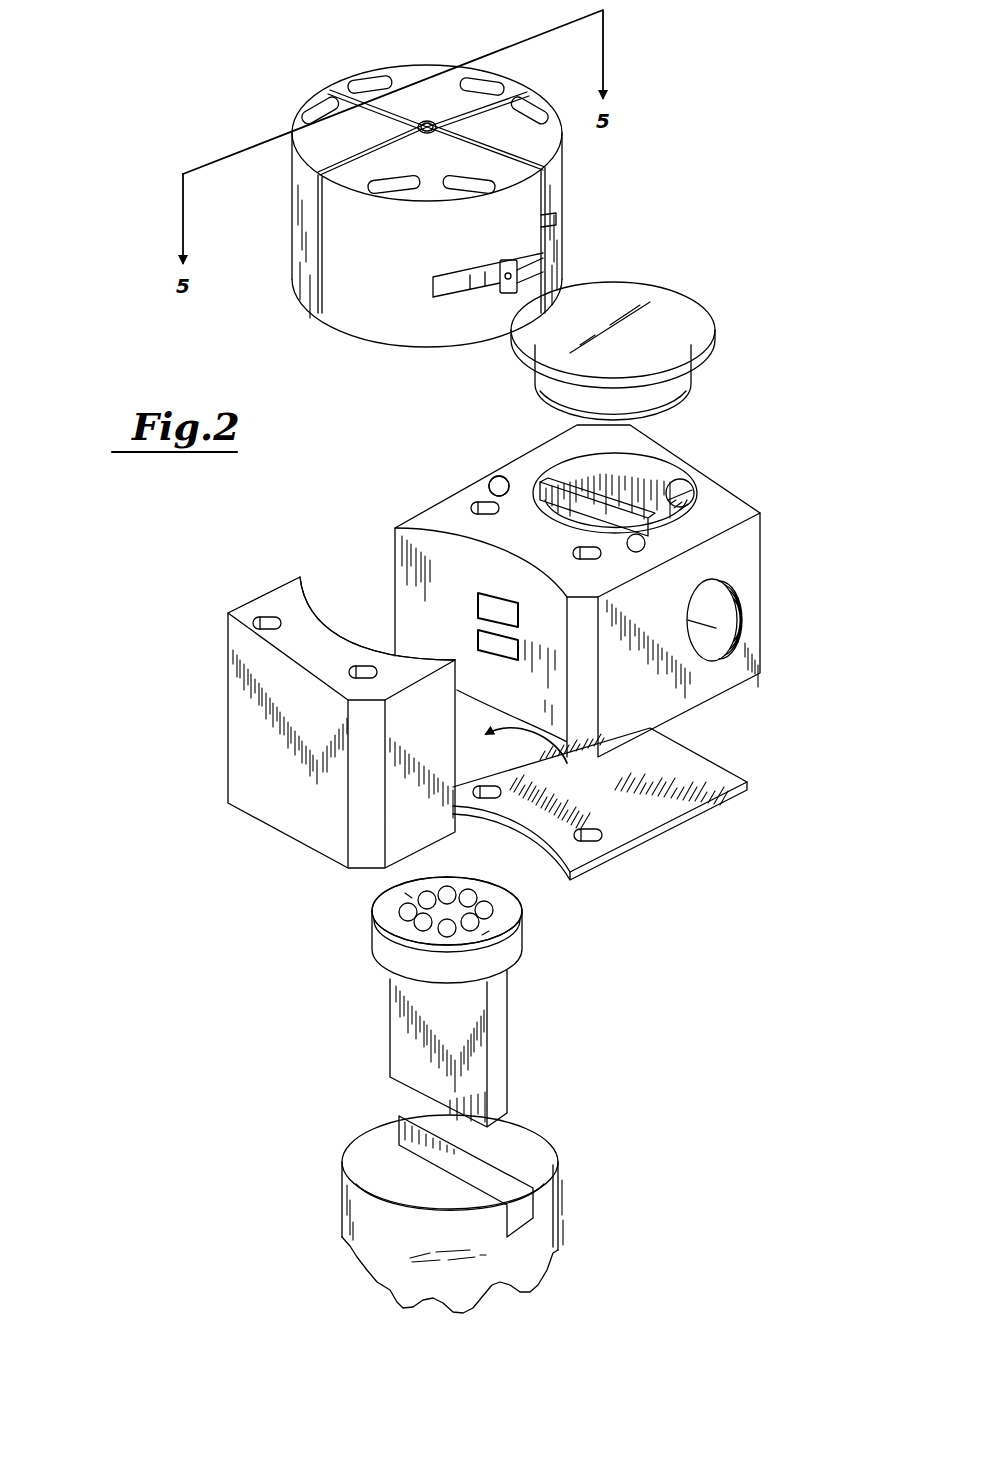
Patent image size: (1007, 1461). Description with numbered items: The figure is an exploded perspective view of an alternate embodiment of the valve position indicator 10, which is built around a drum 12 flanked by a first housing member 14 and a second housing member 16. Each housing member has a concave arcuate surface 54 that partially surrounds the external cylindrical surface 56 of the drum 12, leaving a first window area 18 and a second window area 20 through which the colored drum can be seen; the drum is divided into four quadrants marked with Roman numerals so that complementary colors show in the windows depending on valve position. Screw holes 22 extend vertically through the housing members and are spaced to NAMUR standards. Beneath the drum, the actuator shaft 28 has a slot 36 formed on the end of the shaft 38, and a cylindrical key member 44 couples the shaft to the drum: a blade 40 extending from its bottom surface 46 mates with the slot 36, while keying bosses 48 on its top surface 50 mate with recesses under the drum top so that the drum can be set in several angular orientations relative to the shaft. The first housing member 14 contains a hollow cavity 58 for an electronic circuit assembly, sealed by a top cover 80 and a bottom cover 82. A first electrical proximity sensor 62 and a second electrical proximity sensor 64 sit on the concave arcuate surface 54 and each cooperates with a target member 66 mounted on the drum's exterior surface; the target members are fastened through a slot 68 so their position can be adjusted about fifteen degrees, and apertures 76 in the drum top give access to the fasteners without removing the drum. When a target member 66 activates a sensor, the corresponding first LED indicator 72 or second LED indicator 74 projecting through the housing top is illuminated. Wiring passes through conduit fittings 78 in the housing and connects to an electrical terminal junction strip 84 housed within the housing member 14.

The valve position indicator 10 is at (238, 868).
The drum 12 is at (360, 310).
The first housing member 14 is at (685, 460).
The second housing member 16 is at (272, 618).
The first window area 18 is at (540, 758).
The second window area 20 is at (346, 563).
The screw holes 22 is at (597, 553).
The actuator shaft 28 is at (387, 1268).
The slot 36 is at (385, 1123).
The end of the shaft 38 is at (533, 1143).
The blade 40 is at (497, 1028).
The cylindrical key member 44 is at (513, 940).
The bottom surface 46 is at (377, 981).
The keying bosses 48 is at (445, 892).
The top surface 50 is at (387, 905).
The concave arcuate surface 54 is at (405, 645).
The external cylindrical surface 56 is at (557, 150).
The hollow cavity 58 is at (630, 478).
The first electrical proximity sensor 62 is at (485, 600).
The second electrical proximity sensor 64 is at (482, 643).
The target member 66 is at (557, 220).
The slot 68 is at (440, 288).
The first LED indicator 72 is at (494, 485).
The second LED indicator 74 is at (645, 543).
The apertures 76 is at (361, 83).
The conduit fittings 78 is at (667, 483).
The top cover 80 is at (672, 302).
The bottom cover 82 is at (628, 827).
The electrical terminal junction strip 84 is at (558, 470).